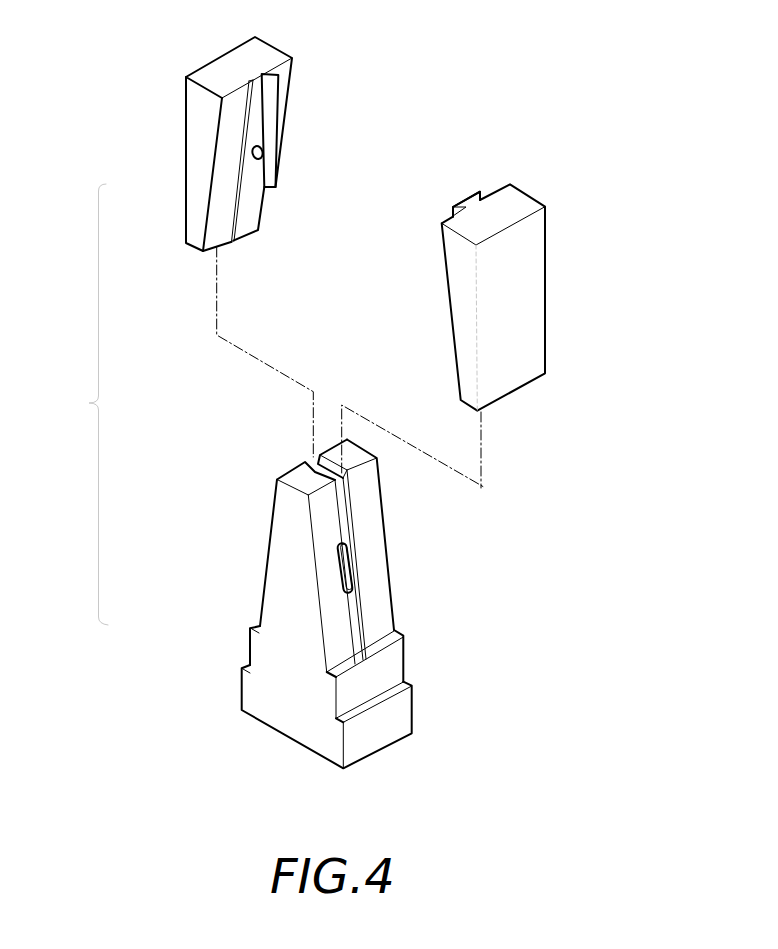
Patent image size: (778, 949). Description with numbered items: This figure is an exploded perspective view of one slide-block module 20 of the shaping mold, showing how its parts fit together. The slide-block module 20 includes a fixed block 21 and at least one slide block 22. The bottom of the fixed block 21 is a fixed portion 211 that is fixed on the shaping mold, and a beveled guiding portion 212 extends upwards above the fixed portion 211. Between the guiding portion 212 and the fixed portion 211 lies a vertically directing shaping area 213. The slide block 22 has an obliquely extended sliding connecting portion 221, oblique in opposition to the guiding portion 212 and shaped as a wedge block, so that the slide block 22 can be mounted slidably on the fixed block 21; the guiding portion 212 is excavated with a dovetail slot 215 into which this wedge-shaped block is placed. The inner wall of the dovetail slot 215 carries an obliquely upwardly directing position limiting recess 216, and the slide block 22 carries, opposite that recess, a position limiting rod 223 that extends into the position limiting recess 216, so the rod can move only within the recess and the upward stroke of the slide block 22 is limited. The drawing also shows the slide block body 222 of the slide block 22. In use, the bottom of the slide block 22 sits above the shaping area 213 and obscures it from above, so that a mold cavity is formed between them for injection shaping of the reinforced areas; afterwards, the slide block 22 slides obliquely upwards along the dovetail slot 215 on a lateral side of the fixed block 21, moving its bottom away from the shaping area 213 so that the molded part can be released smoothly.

The slide-block module 20 is at (76, 404).
The fixed block 21 is at (216, 556).
The fixed portion 211 is at (297, 745).
The guiding portion 212 is at (398, 557).
The shaping area 213 is at (382, 673).
The dovetail slot 215 is at (350, 493).
The position limiting recess 216 is at (335, 557).
The slide block 22 is at (180, 27).
The sliding connecting portion 221 is at (280, 104).
The block body 222 is at (186, 135).
The position limiting rod 223 is at (265, 168).